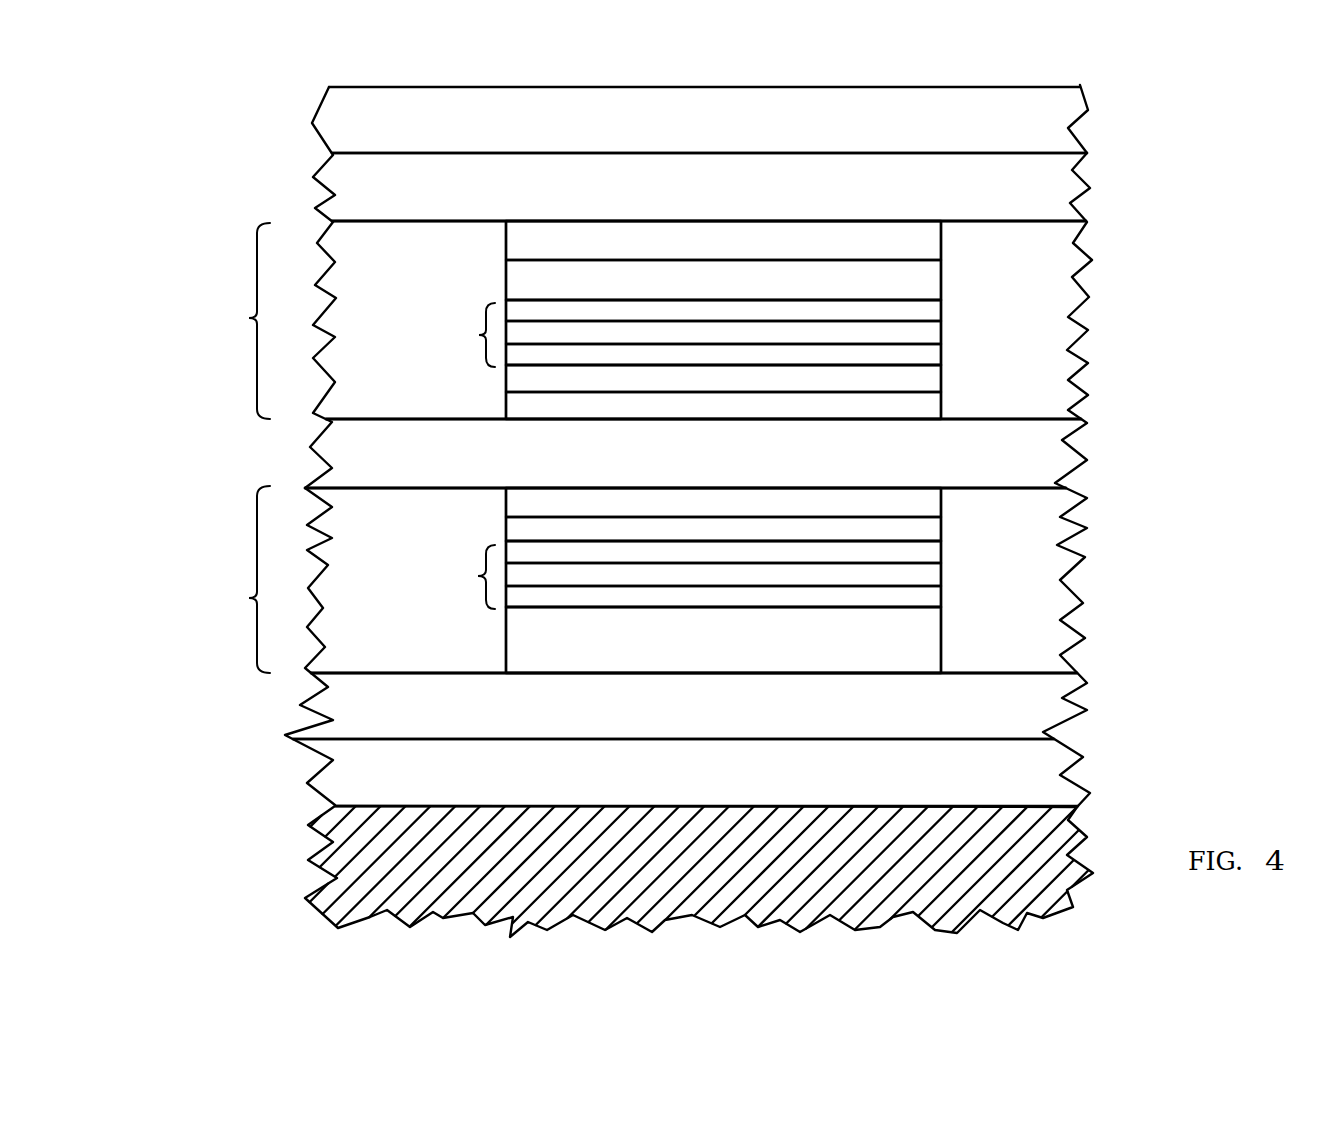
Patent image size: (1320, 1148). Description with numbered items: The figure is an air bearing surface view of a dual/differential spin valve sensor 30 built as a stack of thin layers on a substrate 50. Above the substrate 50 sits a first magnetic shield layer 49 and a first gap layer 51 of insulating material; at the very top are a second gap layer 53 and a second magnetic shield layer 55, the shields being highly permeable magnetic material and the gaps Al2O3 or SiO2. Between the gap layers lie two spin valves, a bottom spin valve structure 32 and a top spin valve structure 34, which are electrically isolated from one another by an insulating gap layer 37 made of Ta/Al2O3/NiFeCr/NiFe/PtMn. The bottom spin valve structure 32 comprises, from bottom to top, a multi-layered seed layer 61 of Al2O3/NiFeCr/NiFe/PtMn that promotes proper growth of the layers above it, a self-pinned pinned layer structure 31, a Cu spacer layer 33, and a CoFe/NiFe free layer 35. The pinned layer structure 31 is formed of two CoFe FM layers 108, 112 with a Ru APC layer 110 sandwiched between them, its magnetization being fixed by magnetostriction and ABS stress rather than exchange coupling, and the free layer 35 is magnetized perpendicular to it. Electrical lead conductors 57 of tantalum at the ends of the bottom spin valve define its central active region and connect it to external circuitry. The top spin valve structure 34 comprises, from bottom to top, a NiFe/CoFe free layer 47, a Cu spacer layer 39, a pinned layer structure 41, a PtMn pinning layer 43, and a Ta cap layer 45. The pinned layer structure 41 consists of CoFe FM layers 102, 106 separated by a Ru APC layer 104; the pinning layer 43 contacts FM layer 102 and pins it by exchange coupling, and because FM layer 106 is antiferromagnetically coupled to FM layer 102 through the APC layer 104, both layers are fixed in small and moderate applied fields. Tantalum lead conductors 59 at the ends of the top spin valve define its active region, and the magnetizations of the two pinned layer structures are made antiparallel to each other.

The dual/differential spin valve sensor 30 is at (242, 861).
The pinned layer structure 31 is at (650, 587).
The bottom spin valve structure 32 is at (609, 579).
The spacer layer 33 is at (930, 530).
The top spin valve structure 34 is at (635, 320).
The free layer 35 is at (923, 498).
The gap layer 37 is at (1032, 452).
The spacer layer 39 is at (927, 375).
The pinned layer structure 41 is at (650, 334).
The pinning layer 43 is at (922, 269).
The cap layer 45 is at (922, 238).
The free layer 47 is at (927, 403).
The first magnetic shield layer 49 is at (1023, 773).
The substrate 50 is at (1032, 862).
The first gap layer 51 is at (1017, 710).
The second gap layer 53 is at (1053, 184).
The second magnetic shield layer 55 is at (1052, 115).
The electrical lead conductors 57 is at (344, 573).
The electrical lead conductors 59 is at (344, 300).
The seed layer 61 is at (923, 653).
The first FM layer 102 is at (927, 305).
The APC layer 104 is at (927, 330).
The second FM layer 106 is at (927, 353).
The first FM layer 108 is at (930, 555).
The APC layer 110 is at (930, 573).
The second FM layer 112 is at (930, 593).